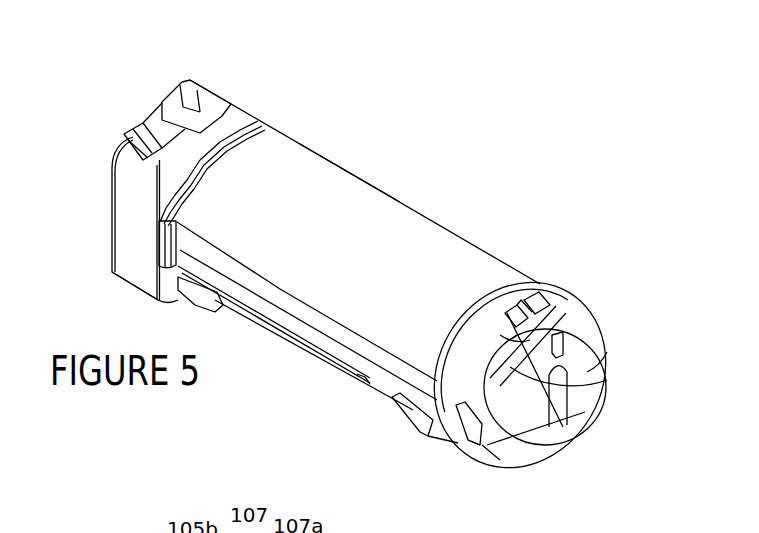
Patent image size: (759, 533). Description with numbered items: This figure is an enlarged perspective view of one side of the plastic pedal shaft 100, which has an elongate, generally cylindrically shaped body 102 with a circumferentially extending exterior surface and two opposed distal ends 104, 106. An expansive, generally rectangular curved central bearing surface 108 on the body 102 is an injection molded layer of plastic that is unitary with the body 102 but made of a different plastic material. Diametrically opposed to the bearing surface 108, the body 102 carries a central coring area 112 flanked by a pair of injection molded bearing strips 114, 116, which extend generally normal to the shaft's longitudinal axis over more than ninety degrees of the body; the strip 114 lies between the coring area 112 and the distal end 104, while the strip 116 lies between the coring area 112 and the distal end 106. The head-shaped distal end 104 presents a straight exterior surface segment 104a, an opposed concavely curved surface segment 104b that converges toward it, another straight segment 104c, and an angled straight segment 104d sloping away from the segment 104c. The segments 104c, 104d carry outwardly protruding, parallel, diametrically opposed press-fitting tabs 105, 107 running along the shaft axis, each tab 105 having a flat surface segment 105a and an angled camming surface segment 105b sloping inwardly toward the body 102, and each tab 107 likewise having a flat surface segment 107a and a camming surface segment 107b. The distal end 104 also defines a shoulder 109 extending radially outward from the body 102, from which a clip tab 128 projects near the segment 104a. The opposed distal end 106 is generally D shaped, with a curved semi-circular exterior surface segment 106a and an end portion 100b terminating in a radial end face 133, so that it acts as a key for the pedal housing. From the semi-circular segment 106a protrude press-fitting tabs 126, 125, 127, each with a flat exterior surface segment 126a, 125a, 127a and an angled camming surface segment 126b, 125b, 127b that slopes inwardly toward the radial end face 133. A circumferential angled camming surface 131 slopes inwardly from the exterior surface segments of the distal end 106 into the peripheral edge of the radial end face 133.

The pedal shaft 100 is at (412, 139).
The cartridge end portion 100b is at (567, 415).
The body 102 is at (394, 194).
The distal end 104 is at (219, 95).
The straight exterior surface segment 104a is at (140, 228).
The concavely curved surface segment 104b is at (257, 115).
The straight exterior surface segment 104c is at (248, 107).
The straight angled exterior surface segment 104d is at (177, 304).
The press-fitting/wedging/camming tab 105 is at (137, 142).
The flat surface segment 105a is at (157, 147).
The angled camming surface segment 105b is at (160, 157).
The distal end 106 is at (577, 301).
The curved semi-circular exterior surface segment 106a is at (565, 327).
The press-fitting/wedging/camming tab 107 is at (167, 97).
The flat surface segment 107a is at (177, 97).
The angled camming surface segment 107b is at (198, 84).
The exterior curved central bearing surface 108 is at (408, 230).
The shoulder 109 is at (160, 192).
The central coring area 112 is at (304, 353).
The bearing strip 114 is at (202, 287).
The bearing strip 116 is at (412, 430).
The press-fitting/wedging/camming tab 125 is at (513, 305).
The flat exterior surface segment 125a is at (530, 303).
The angled exterior camming surface segment 125b is at (513, 325).
The press-fitting/wedging/camming tab 126 is at (457, 447).
The flat exterior surface segment 126a is at (480, 470).
The angled exterior camming surface segment 126b is at (533, 425).
The press-fitting/wedging/camming tab 127 is at (538, 303).
The flat exterior surface segment 127a is at (565, 302).
The angled exterior camming surface segment 127b is at (572, 303).
The clip tab 128 is at (157, 248).
The camming surface 131 is at (610, 378).
The radial end face 133 is at (587, 372).